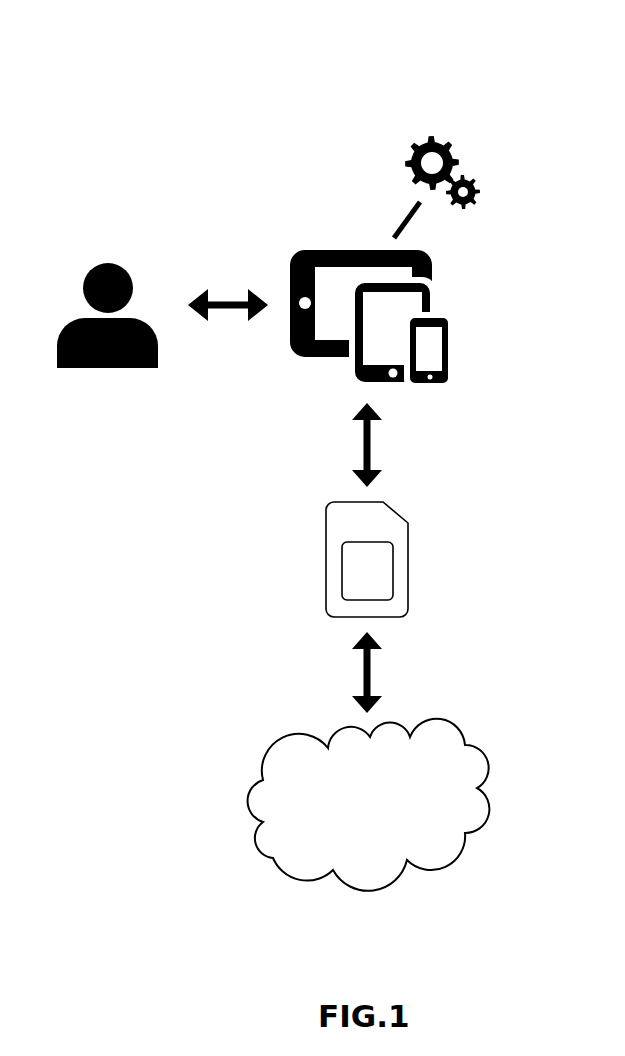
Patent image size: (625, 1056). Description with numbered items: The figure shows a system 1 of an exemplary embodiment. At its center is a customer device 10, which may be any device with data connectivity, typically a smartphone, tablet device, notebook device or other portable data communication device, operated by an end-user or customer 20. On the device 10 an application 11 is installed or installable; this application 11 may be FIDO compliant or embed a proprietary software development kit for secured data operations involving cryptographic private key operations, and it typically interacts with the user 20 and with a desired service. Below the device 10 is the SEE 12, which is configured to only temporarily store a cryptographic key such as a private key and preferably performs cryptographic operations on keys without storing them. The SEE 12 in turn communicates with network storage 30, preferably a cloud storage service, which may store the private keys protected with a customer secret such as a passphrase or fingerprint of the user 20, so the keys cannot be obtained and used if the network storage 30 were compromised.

The system 1 is at (277, 87).
The customer device 10 is at (455, 307).
The application 11 is at (467, 140).
The SEE 12 is at (415, 523).
The user 20 is at (82, 273).
The network storage 30 is at (468, 730).